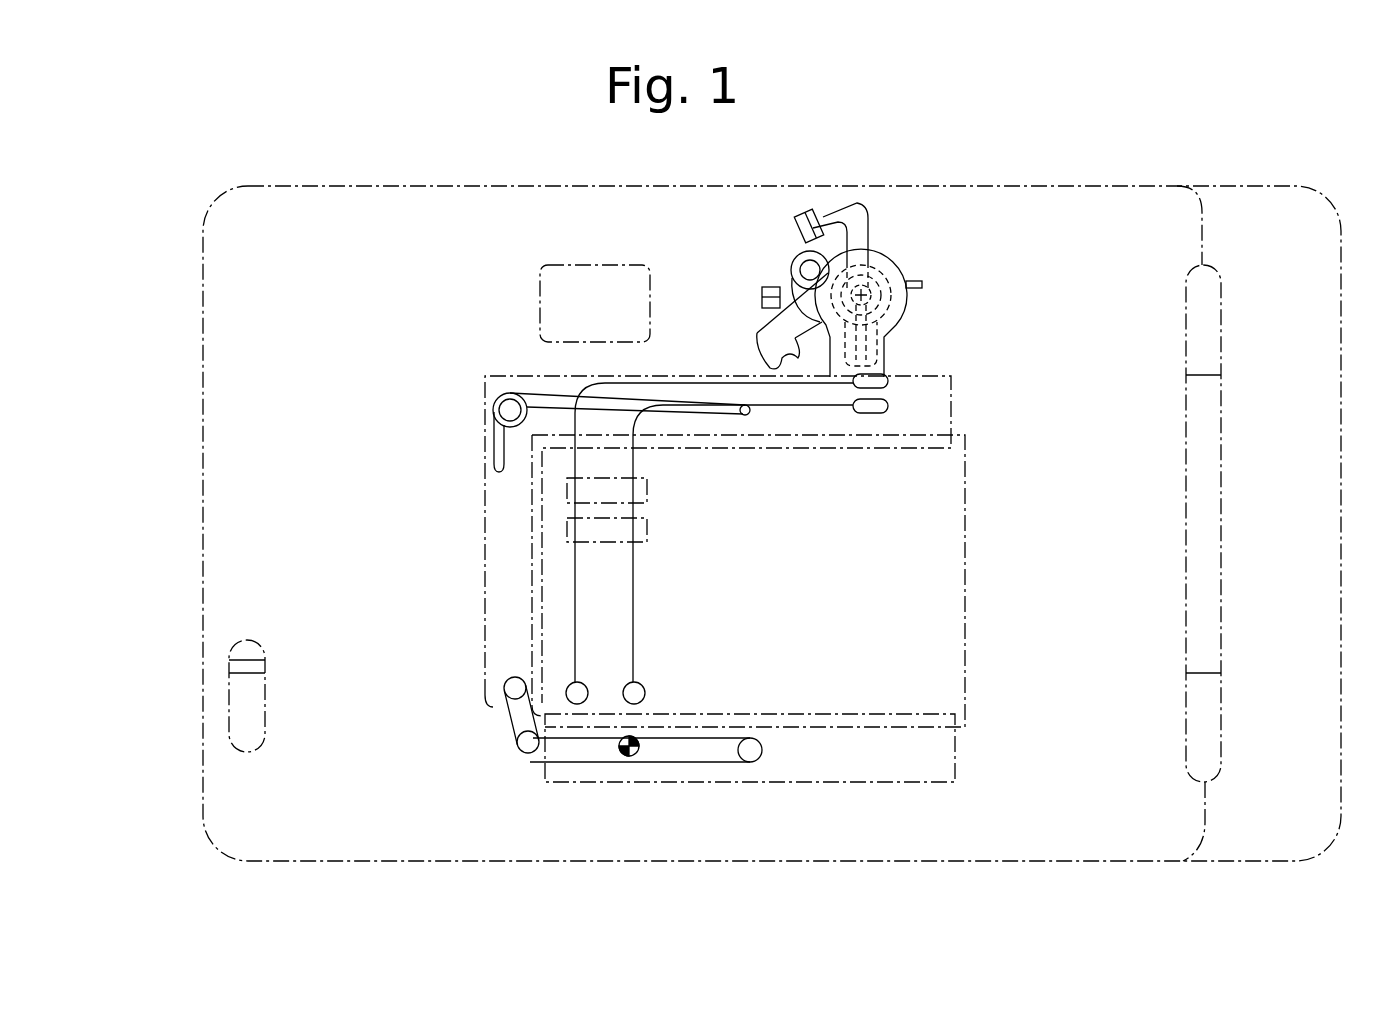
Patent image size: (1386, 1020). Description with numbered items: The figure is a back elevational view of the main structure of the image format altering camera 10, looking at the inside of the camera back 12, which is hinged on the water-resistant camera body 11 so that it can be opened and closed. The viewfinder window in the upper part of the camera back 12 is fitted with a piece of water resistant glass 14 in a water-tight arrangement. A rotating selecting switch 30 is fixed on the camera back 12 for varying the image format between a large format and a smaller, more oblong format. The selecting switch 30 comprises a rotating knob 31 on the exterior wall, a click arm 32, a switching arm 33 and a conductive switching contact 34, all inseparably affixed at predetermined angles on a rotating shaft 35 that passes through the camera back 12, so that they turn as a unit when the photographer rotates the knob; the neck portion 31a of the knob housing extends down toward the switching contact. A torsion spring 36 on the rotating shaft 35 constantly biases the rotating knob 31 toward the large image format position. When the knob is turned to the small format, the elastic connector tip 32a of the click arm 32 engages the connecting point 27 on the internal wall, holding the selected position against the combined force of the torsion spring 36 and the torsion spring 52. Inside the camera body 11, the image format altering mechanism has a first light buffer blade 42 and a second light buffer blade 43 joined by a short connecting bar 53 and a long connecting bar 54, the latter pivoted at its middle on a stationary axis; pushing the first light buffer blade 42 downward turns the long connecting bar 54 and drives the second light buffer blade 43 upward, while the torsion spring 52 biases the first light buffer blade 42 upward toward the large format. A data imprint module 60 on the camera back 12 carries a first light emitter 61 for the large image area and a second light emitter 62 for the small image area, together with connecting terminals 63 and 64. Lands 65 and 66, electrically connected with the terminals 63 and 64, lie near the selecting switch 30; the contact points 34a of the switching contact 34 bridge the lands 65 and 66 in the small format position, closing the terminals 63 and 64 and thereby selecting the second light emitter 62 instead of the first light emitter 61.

The image format altering camera 10 is at (1262, 163).
The camera body 11 is at (1293, 833).
The camera back 12 is at (397, 220).
The water resistant glass 14 is at (560, 277).
The connecting point 27 is at (770, 287).
The selecting switch 30 is at (850, 257).
The rotating knob 31 is at (897, 265).
The neck portion of housing 31a is at (880, 348).
The click arm 32 is at (863, 205).
The connector tip 32a is at (823, 217).
The switching arm 33 is at (800, 252).
The switching contact 34 is at (760, 337).
The contact points 34a is at (758, 353).
The rotating shaft 35 is at (888, 300).
The torsion spring 36 is at (922, 284).
The first light buffer blade 42 is at (951, 401).
The second light buffer blade 43 is at (955, 753).
The torsion spring 52 is at (494, 449).
The short connecting bar 53 is at (512, 712).
The long connecting bar 54 is at (657, 752).
The data imprint module 60 is at (965, 528).
The first light emitter 61 is at (567, 492).
The second light emitter 62 is at (567, 535).
The connecting terminal 63 is at (577, 705).
The connecting terminal 64 is at (634, 705).
The land 65 is at (890, 384).
The land 66 is at (877, 410).